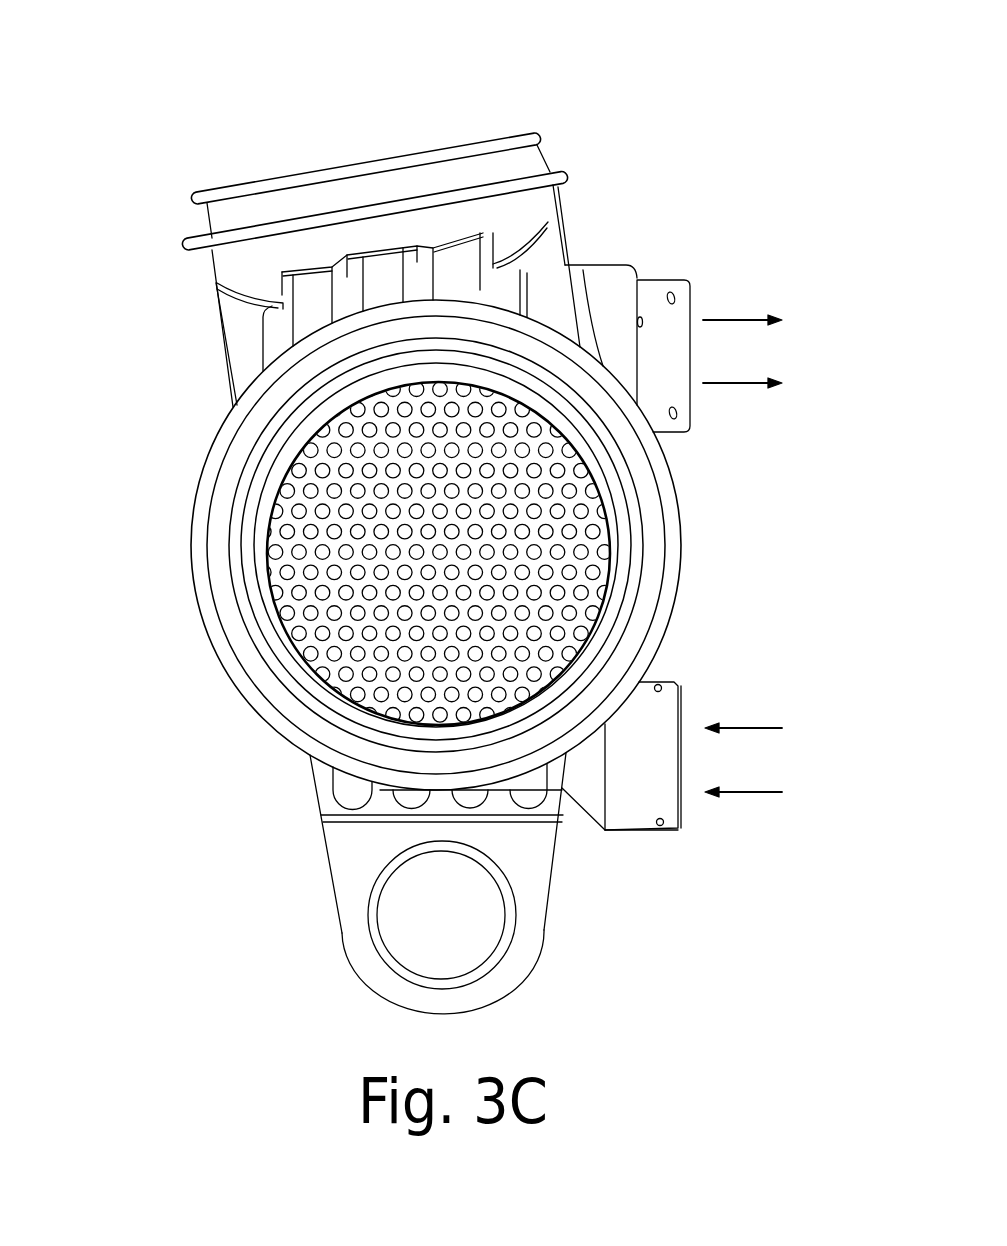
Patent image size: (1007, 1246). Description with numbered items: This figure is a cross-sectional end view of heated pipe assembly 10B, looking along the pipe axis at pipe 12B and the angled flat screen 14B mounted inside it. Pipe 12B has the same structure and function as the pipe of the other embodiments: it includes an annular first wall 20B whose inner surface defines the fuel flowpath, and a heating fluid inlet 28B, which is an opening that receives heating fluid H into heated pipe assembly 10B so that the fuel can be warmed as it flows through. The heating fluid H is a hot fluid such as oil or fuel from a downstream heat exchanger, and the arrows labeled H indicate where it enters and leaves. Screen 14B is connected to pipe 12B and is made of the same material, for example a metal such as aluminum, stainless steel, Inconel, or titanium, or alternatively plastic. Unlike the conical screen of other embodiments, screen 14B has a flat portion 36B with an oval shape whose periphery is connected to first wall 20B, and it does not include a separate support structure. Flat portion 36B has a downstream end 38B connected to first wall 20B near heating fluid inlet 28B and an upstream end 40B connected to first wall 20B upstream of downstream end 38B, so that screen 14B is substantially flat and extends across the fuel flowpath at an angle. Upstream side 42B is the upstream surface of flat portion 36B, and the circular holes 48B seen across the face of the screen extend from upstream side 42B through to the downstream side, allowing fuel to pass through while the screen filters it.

The heated pipe assembly 10B is at (113, 105).
The pipe 12B is at (724, 470).
The screen 14B is at (261, 536).
The first wall 20B is at (258, 450).
The heating fluid inlet 28B is at (683, 808).
The flat portion 36B is at (362, 669).
The downstream end 38B is at (485, 399).
The upstream end 40B is at (428, 718).
The upstream side 42B is at (493, 538).
The holes 48B is at (313, 657).